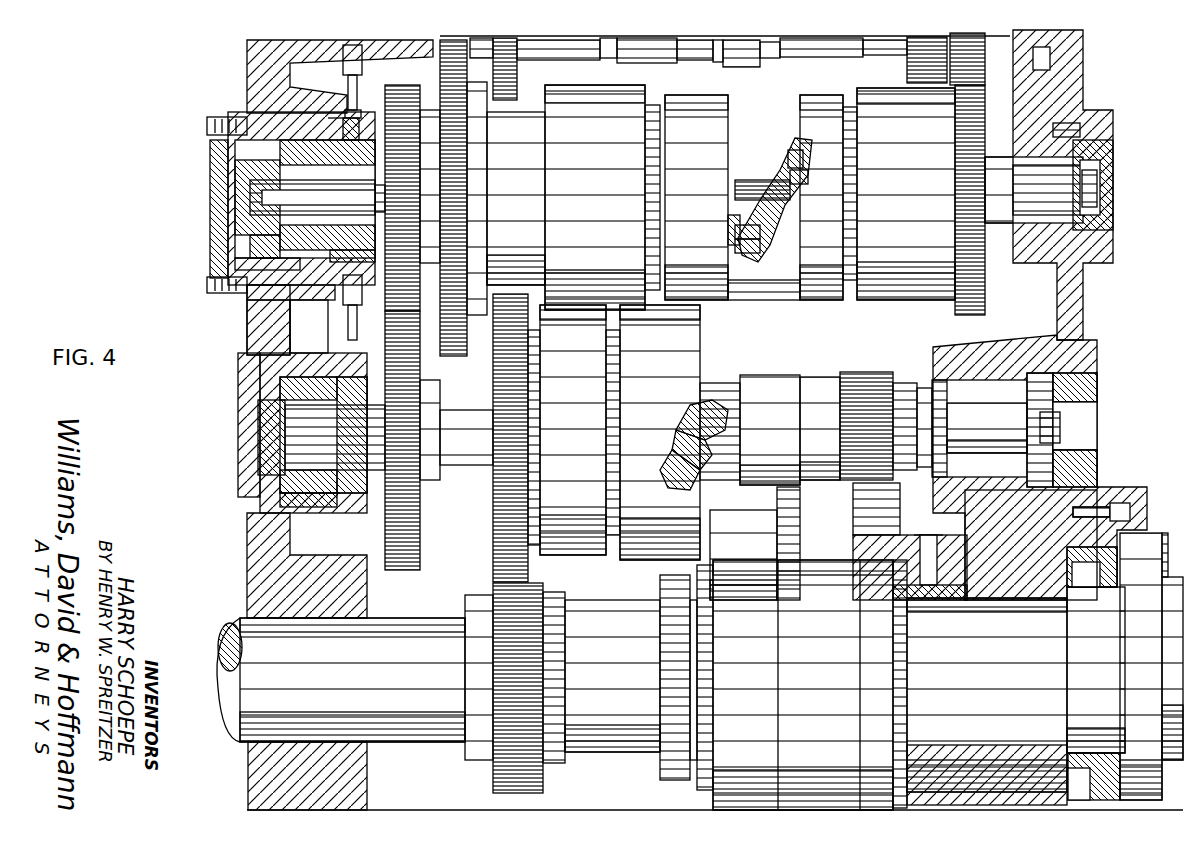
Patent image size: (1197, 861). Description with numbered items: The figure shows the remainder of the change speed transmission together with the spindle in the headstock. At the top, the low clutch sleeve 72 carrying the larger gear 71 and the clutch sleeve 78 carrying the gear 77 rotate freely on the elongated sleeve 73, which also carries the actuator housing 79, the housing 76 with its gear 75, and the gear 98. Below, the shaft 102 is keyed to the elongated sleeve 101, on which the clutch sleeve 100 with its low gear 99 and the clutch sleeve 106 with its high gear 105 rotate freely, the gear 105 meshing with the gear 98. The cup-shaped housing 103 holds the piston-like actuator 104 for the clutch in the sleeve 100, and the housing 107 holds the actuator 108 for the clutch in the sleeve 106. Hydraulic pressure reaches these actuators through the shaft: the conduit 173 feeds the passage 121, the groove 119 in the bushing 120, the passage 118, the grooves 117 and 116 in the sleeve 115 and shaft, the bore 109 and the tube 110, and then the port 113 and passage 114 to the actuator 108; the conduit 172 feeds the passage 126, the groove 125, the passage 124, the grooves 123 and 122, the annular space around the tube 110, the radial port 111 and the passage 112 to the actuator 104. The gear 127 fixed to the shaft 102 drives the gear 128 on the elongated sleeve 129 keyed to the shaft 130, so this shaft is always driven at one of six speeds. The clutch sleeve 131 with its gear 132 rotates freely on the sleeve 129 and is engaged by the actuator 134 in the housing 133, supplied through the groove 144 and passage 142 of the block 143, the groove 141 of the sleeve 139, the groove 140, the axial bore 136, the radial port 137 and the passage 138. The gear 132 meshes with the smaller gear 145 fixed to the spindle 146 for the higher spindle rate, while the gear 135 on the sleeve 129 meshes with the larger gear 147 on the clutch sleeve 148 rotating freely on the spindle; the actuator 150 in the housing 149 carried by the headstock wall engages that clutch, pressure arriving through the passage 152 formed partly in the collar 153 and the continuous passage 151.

The gear 71 is at (508, 60).
The low clutch sleeve 72 is at (562, 58).
The actuator housing 79 is at (625, 58).
The elongated sleeve 73 is at (675, 60).
The gear 75 is at (718, 62).
The housing 76 is at (762, 60).
The clutch sleeve 78 is at (815, 57).
The gear 77 is at (907, 60).
The gear 98 is at (978, 50).
The gear 99 is at (470, 160).
The clutch sleeve 100 is at (603, 157).
The elongated sleeve 101 is at (752, 290).
The shaft 102 is at (235, 210).
The cup-shaped housing 103 is at (713, 130).
The clutch actuator 104 is at (712, 238).
The gear 105 is at (970, 312).
The clutch sleeve 106 is at (915, 280).
The cup-shaped housing 107 is at (845, 280).
The actuator 108 is at (828, 125).
The axial bore 109 is at (805, 178).
The tube 110 is at (735, 185).
The radial port 111 is at (742, 233).
The passage 112 is at (740, 253).
The elongated radial port 113 is at (805, 166).
The passage 114 is at (790, 150).
The sleeve 115 is at (222, 156).
The circumferential groove 116 is at (240, 184).
The circumferential groove 117 is at (252, 240).
The passage 118 is at (240, 262).
The circumferential groove 119 is at (215, 284).
The supporting block or bushing 120 is at (215, 130).
The passage 121 is at (262, 312).
The circumferential groove 122 is at (312, 186).
The circumferential groove 123 is at (327, 237).
The passage 124 is at (351, 253).
The circumferential groove 125 is at (327, 152).
The passage 126 is at (338, 114).
The gear 127 is at (433, 72).
The gear 128 is at (400, 570).
The elongated sleeve 129 is at (718, 382).
The shaft 130 is at (378, 482).
The clutch sleeve 131 is at (560, 548).
The gear 132 is at (495, 540).
The cup-shaped housing 133 is at (698, 342).
The actuator 134 is at (685, 490).
The gear 135 is at (858, 375).
The axial bore 136 is at (683, 432).
The radial port 137 is at (725, 442).
The passage 138 is at (675, 462).
The sleeve 139 is at (362, 402).
The circumferential groove 140 is at (265, 420).
The circumferential groove 141 is at (265, 468).
The passage 142 is at (282, 478).
The supporting block or bushing 143 is at (338, 377).
The circumferential groove 144 is at (302, 498).
The gear 145 is at (515, 780).
The work or tool spindle 146 is at (395, 725).
The gear 147 is at (857, 653).
The clutch sleeve 148 is at (780, 503).
The housing 149 is at (905, 540).
The actuator 150 is at (853, 555).
The passage 151 is at (905, 600).
The passage 152 is at (940, 545).
The collar 153 is at (975, 780).
The conduit 172 is at (345, 65).
The conduit 173 is at (347, 335).